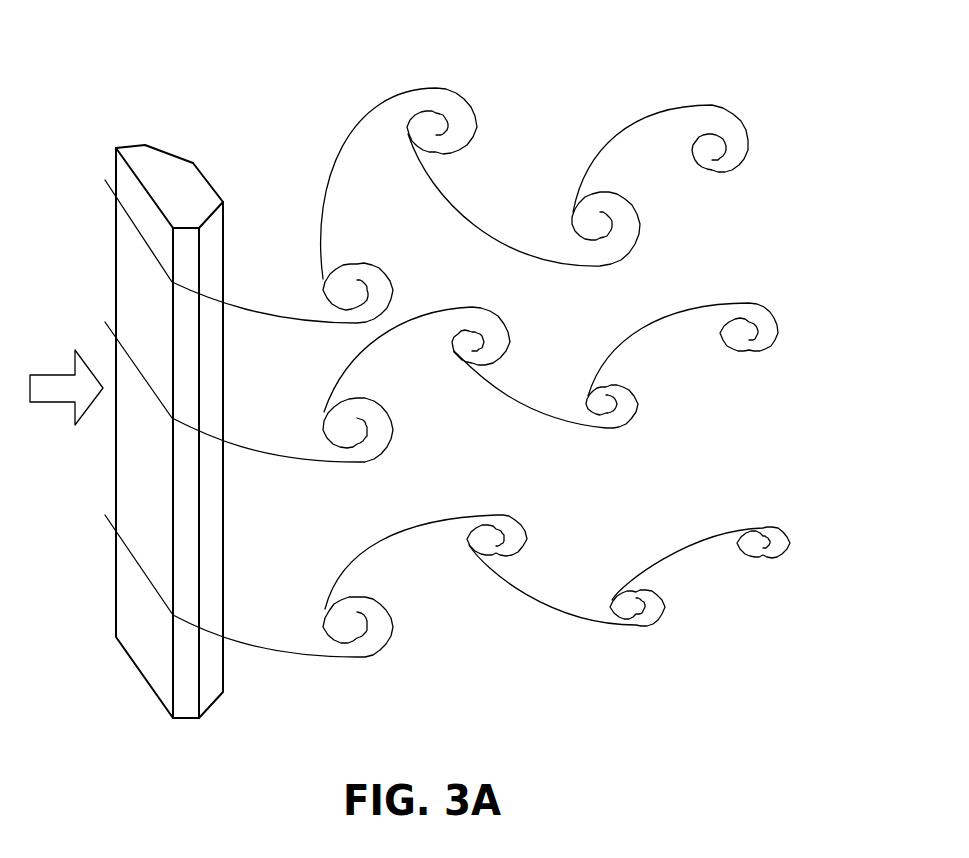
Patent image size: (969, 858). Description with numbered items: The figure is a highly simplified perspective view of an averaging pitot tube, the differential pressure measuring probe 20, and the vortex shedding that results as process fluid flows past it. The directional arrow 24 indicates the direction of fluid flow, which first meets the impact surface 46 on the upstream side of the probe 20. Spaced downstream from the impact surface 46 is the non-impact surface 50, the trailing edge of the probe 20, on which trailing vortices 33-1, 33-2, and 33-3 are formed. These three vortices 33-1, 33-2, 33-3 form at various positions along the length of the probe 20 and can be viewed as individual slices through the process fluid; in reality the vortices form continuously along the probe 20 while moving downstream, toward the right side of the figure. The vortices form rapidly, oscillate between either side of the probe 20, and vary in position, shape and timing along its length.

The differential pressure measuring probe 20 is at (205, 127).
The non-impact surface 50 is at (212, 183).
The impact surface 46 is at (132, 282).
The directional arrow 24 is at (51, 399).
The trailing vortex 33-1 is at (757, 113).
The trailing vortex 33-2 is at (779, 290).
The trailing vortex 33-3 is at (795, 519).